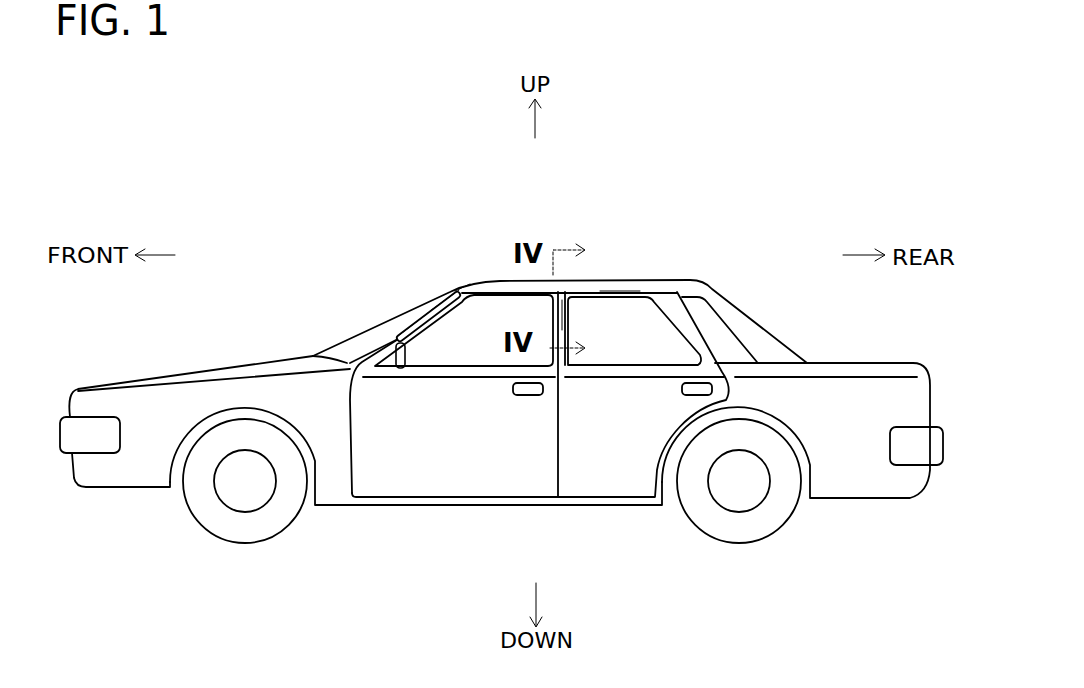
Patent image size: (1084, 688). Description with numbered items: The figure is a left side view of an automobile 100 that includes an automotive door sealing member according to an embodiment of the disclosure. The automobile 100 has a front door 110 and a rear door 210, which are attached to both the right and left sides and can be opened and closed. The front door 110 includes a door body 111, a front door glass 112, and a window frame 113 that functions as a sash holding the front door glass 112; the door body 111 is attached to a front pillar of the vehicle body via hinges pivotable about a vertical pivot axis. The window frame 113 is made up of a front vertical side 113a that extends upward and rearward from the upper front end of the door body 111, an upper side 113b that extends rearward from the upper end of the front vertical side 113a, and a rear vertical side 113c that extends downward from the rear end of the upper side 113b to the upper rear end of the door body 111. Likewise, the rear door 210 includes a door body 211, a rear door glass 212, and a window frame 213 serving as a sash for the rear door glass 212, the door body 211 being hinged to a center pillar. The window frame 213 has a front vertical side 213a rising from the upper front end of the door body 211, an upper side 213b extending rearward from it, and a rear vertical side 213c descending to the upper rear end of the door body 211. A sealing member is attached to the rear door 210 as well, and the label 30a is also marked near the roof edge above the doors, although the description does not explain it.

The automobile 100 is at (181, 366).
The front door 110 is at (350, 442).
The door body 111 is at (462, 467).
The front door glass 112 is at (407, 342).
The window frame 113 is at (497, 171).
The front vertical side 113a is at (427, 353).
The upper side 113b is at (490, 287).
The rear vertical side 113c is at (503, 290).
The roof side member 30a is at (512, 290).
The rear door 210 is at (665, 453).
The door body 211 is at (592, 463).
The rear door glass 212 is at (668, 350).
The window frame 213 is at (778, 189).
The front vertical side 213a is at (573, 320).
The upper side 213b is at (630, 290).
The rear vertical side 213c is at (677, 317).